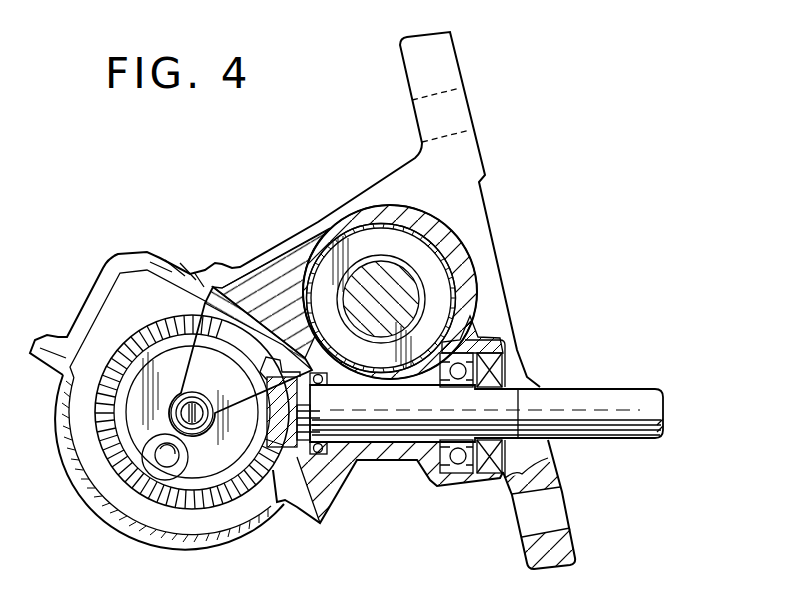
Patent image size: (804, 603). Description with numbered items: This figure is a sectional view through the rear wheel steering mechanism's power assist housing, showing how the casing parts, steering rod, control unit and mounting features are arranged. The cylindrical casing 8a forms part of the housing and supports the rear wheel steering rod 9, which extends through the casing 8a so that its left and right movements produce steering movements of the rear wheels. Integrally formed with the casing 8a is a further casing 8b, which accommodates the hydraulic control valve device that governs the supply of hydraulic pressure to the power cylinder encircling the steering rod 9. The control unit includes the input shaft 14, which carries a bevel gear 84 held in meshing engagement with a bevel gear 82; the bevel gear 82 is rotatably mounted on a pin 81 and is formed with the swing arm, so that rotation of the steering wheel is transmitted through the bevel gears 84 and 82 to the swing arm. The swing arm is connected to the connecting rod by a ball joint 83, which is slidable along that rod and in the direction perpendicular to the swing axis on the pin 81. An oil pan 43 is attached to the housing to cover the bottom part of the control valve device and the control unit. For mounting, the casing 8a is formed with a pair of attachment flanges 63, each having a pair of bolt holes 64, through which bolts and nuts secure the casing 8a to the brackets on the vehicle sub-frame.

The cylindrical casing 8a is at (462, 248).
The casing 8b is at (337, 480).
The rear wheel steering rod 9 is at (386, 283).
The input shaft 14 is at (612, 397).
The oil pan 43 is at (230, 540).
The attachment flange 63 is at (420, 48).
The bolt hole 64 is at (470, 110).
The pin 81 is at (198, 403).
The bevel gear 82 is at (173, 340).
The ball joint 83 is at (158, 473).
The bevel gear 84 is at (282, 503).